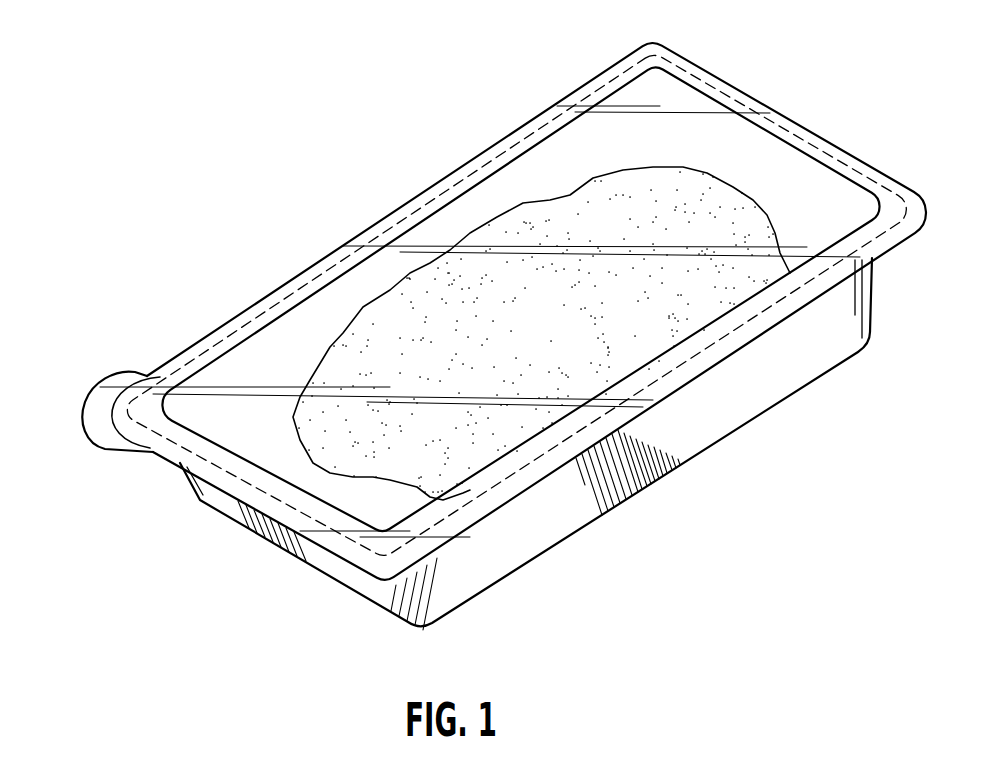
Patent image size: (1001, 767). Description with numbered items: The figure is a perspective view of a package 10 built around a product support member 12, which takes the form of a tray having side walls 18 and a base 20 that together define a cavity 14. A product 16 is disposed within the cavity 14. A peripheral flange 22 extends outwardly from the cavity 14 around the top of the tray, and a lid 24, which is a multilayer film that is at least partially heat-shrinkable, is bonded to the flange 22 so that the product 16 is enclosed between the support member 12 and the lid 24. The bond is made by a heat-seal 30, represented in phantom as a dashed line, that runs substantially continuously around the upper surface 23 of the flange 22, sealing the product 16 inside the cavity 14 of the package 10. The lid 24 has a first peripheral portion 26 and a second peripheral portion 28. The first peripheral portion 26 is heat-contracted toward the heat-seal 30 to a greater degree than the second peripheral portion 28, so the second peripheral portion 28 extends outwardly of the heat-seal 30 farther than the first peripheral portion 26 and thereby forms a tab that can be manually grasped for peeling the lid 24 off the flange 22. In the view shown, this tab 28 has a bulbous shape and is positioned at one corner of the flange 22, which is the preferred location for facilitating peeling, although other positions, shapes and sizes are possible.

The package 10 is at (362, 157).
The product support member 12 is at (171, 473).
The cavity 14 is at (623, 120).
The product 16 is at (502, 343).
The side walls 18 is at (691, 413).
The base 20 is at (608, 536).
The peripheral flange 22 is at (807, 147).
The upper surface 23 is at (697, 78).
The lid 24 is at (270, 347).
The first peripheral portion 26 is at (757, 92).
The second peripheral portion 28 is at (87, 432).
The heat-seal 30 is at (403, 212).